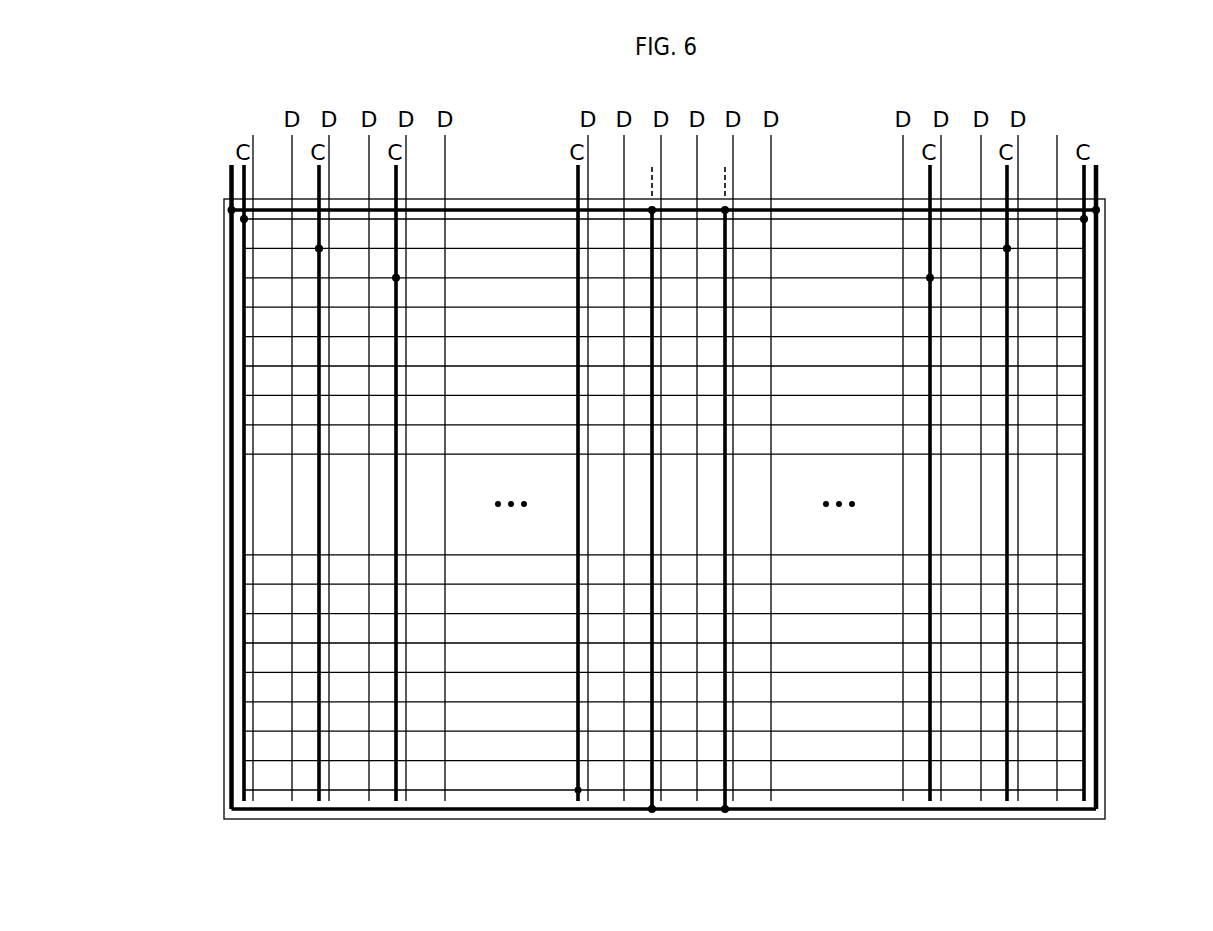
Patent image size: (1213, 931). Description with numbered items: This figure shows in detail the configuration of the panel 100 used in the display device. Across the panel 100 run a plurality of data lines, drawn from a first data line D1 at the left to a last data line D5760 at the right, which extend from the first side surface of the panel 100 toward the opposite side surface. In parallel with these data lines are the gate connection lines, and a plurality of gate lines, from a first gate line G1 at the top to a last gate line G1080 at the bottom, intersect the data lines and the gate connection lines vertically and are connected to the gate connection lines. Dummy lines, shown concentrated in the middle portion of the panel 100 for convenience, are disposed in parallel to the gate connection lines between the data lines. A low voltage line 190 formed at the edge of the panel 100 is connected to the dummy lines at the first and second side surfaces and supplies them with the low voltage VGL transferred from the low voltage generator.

The panel 100 is at (1105, 363).
The low voltage line 190 is at (665, 487).
The low voltage VGL is at (229, 190).
The gate line G1 is at (268, 221).
The gate line G1080 is at (268, 790).
The data line D1 is at (252, 454).
The data line D5760 is at (1085, 454).